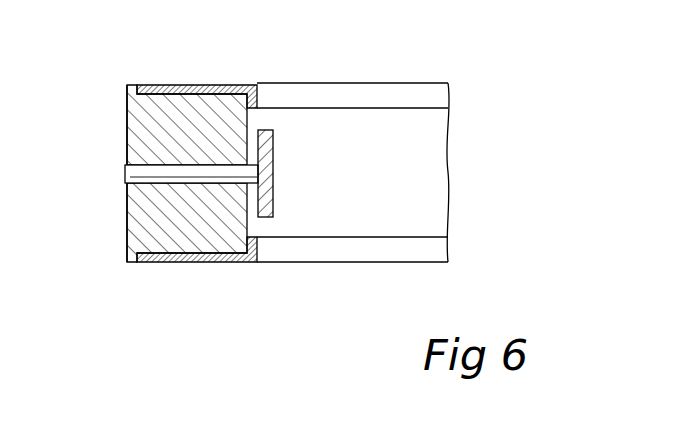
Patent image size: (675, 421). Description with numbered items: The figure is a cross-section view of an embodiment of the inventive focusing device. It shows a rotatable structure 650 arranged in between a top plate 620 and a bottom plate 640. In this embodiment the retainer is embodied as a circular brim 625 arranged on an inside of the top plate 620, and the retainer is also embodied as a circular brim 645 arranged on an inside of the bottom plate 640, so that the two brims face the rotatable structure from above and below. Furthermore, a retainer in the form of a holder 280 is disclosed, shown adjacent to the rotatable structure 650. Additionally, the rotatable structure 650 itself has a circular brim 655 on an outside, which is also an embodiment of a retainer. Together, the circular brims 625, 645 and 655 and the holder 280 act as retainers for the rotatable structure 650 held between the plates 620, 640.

The holder 280 is at (267, 157).
The top plate 620 is at (403, 98).
The circular brim 625 is at (257, 100).
The bottom plate 640 is at (412, 252).
The circular brim 645 is at (259, 247).
The rotatable structure 650 is at (138, 142).
The circular brim 655 is at (128, 263).